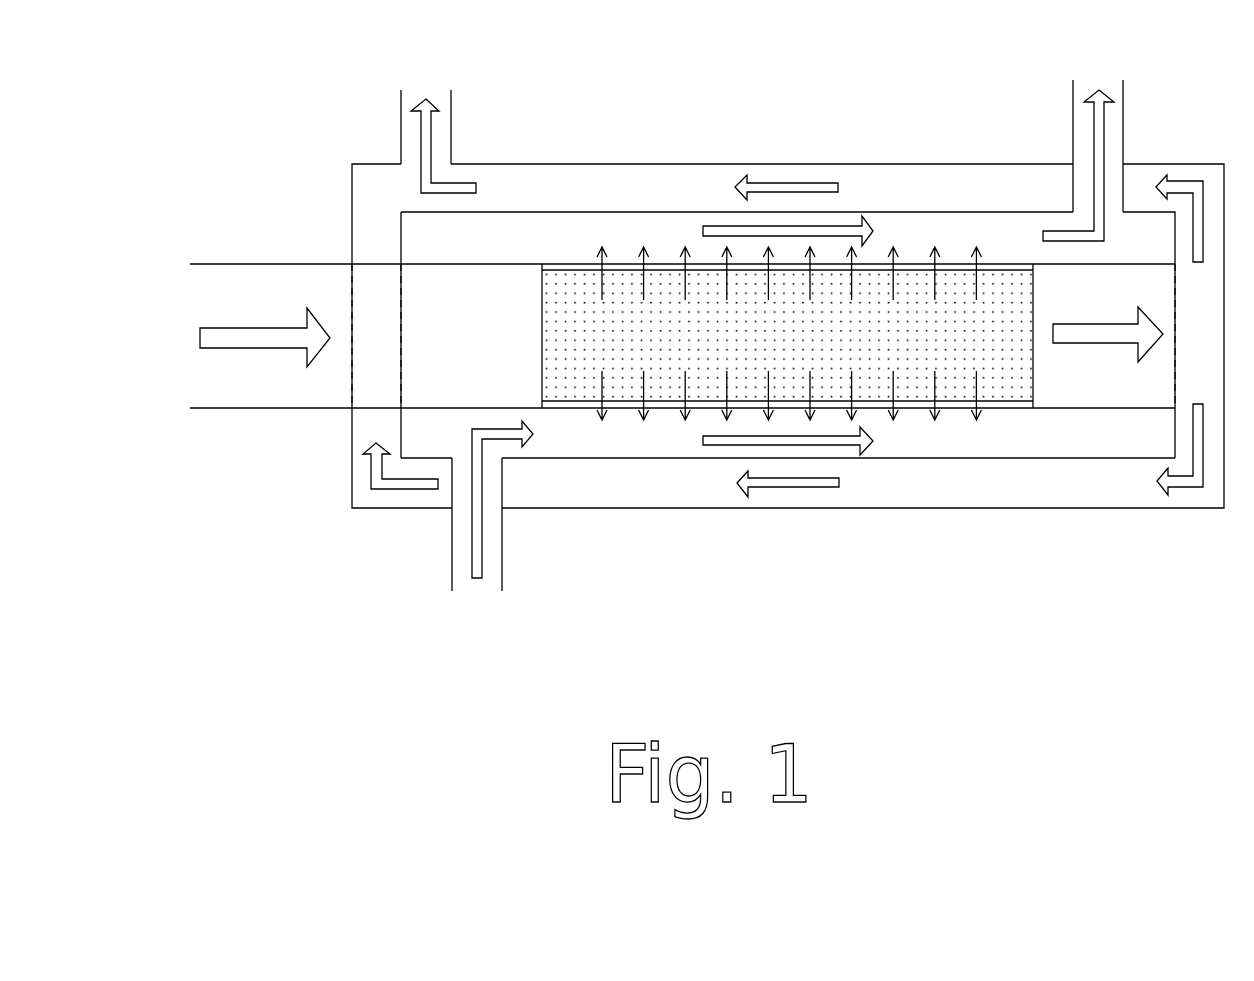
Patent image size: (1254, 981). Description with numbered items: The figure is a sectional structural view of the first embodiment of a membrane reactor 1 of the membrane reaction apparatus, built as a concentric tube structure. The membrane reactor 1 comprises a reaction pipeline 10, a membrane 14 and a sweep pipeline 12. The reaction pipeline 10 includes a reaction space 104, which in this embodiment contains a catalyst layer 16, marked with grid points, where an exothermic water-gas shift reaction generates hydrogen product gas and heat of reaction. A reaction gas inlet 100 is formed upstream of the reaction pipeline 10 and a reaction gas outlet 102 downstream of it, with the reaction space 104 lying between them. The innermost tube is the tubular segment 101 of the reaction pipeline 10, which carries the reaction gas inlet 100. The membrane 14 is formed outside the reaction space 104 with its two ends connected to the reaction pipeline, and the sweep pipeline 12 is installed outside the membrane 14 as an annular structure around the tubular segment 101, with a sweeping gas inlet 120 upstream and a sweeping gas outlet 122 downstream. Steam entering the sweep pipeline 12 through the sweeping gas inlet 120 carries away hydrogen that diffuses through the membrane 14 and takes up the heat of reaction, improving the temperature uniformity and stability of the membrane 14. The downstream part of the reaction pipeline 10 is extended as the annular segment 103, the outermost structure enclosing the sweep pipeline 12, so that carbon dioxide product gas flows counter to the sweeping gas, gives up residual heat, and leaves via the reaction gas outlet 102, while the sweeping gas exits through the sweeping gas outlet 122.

The membrane reactor 1 is at (272, 152).
The reaction pipeline 10 is at (492, 272).
The sweep pipeline 12 is at (567, 447).
The membrane 14 is at (1033, 403).
The catalyst layer 16 is at (1023, 312).
The reaction gas inlet 100 is at (193, 335).
The tubular segment 101 is at (1090, 393).
The reaction gas outlet 102 is at (407, 100).
The annular segment 103 is at (973, 488).
The reaction space 104 is at (588, 352).
The sweeping gas inlet 120 is at (495, 562).
The sweeping gas outlet 122 is at (1113, 117).